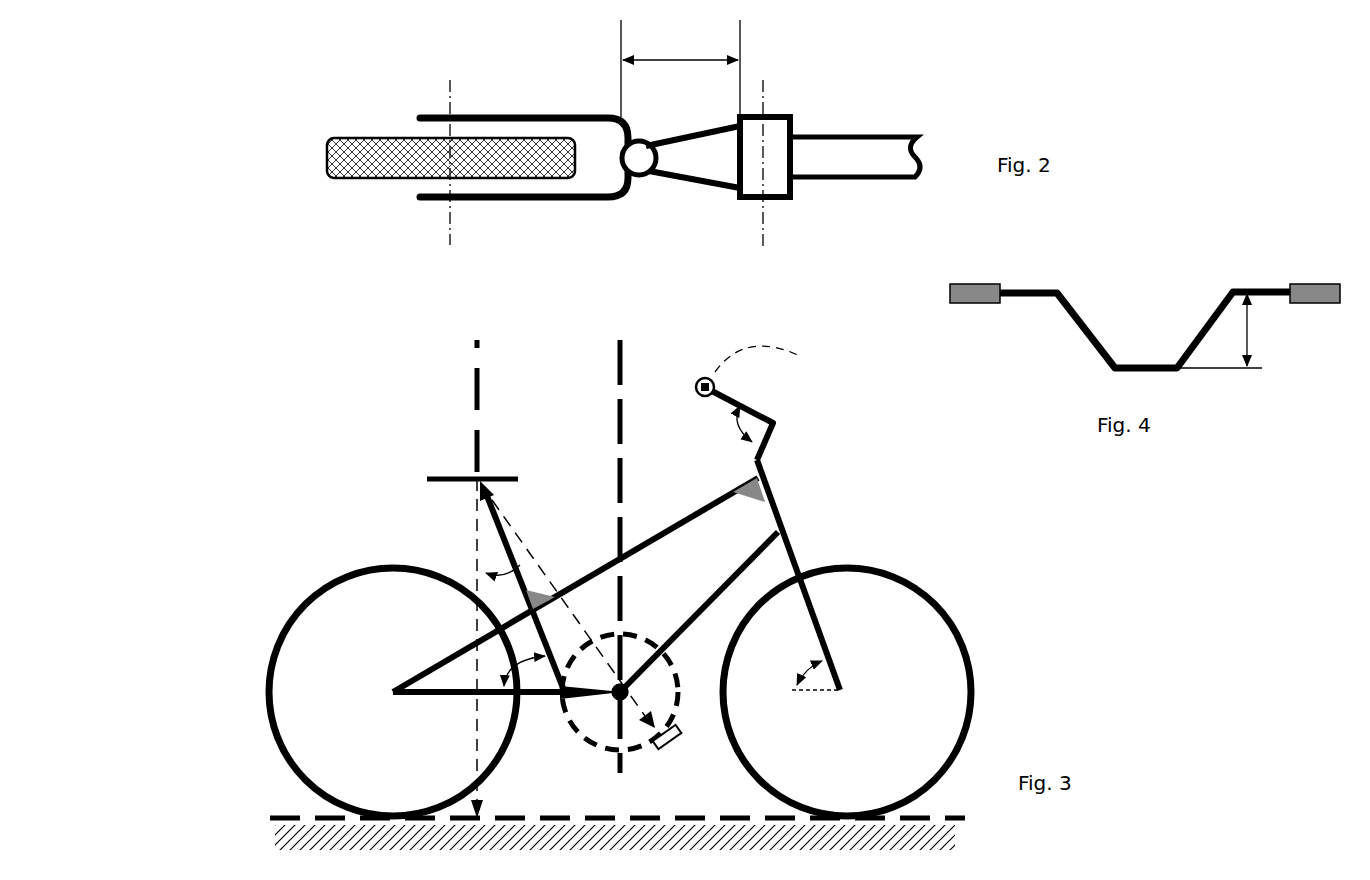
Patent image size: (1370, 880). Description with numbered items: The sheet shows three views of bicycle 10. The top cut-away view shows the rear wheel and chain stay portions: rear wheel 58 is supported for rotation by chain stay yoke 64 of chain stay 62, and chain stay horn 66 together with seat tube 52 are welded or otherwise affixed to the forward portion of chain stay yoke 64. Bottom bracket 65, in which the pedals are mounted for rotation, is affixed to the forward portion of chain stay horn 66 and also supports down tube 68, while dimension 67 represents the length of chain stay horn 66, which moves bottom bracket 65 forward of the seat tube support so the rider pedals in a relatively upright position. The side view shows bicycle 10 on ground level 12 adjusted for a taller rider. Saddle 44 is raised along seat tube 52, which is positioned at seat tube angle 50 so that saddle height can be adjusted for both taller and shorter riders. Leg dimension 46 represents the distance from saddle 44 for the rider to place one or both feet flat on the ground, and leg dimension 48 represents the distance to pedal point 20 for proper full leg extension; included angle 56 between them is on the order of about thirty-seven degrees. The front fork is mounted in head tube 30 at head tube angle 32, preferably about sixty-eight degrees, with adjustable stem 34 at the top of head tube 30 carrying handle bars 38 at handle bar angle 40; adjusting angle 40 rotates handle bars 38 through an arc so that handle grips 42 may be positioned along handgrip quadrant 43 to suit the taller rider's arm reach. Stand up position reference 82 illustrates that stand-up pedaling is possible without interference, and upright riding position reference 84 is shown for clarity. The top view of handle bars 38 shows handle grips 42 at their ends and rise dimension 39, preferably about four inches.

In FIG. 3, the bicycle 10 is at (352, 532).
In FIG. 3, the ground level 12 is at (567, 816).
In FIG. 3, the pedal point 20 is at (674, 748).
In FIG. 3, the head tube 30 is at (780, 512).
In FIG. 3, the head tube angle 32 is at (807, 670).
In FIG. 3, the adjustable stem 34 is at (752, 456).
In FIG. 4, the handle bars 38 is at (1152, 316).
In FIG. 3, the handle bars 38 is at (752, 408).
In FIG. 4, the rise dimension 39 is at (1248, 325).
In FIG. 3, the handle bar angle 40 is at (740, 432).
In FIG. 4, the handle grips 42 is at (990, 303).
In FIG. 3, the handle grips 42 is at (697, 389).
In FIG. 3, the handgrip upper quadrant 43 is at (748, 352).
In FIG. 3, the saddle 44 is at (442, 478).
In FIG. 3, the leg dimension 46 is at (477, 513).
In FIG. 3, the leg dimension 48 is at (502, 516).
In FIG. 3, the seat tube angle 50 is at (531, 674).
In FIG. 2, the seat tube 52 is at (636, 182).
In FIG. 3, the seat tube 52 is at (548, 600).
In FIG. 3, the included angle 56 is at (505, 560).
In FIG. 2, the rear wheel 58 is at (327, 158).
In FIG. 2, the chain stay 62 is at (504, 192).
In FIG. 2, the chain stay yoke 64 is at (563, 199).
In FIG. 2, the bottom bracket 65 is at (745, 200).
In FIG. 3, the bottom bracket 65 is at (610, 705).
In FIG. 2, the chain stay horn 66 is at (672, 181).
In FIG. 2, the dimension 67 is at (688, 58).
In FIG. 2, the down tube 68 is at (921, 156).
In FIG. 3, the down tube 68 is at (705, 612).
In FIG. 3, the stand up position reference 82 is at (618, 432).
In FIG. 3, the upright riding position reference 84 is at (475, 397).